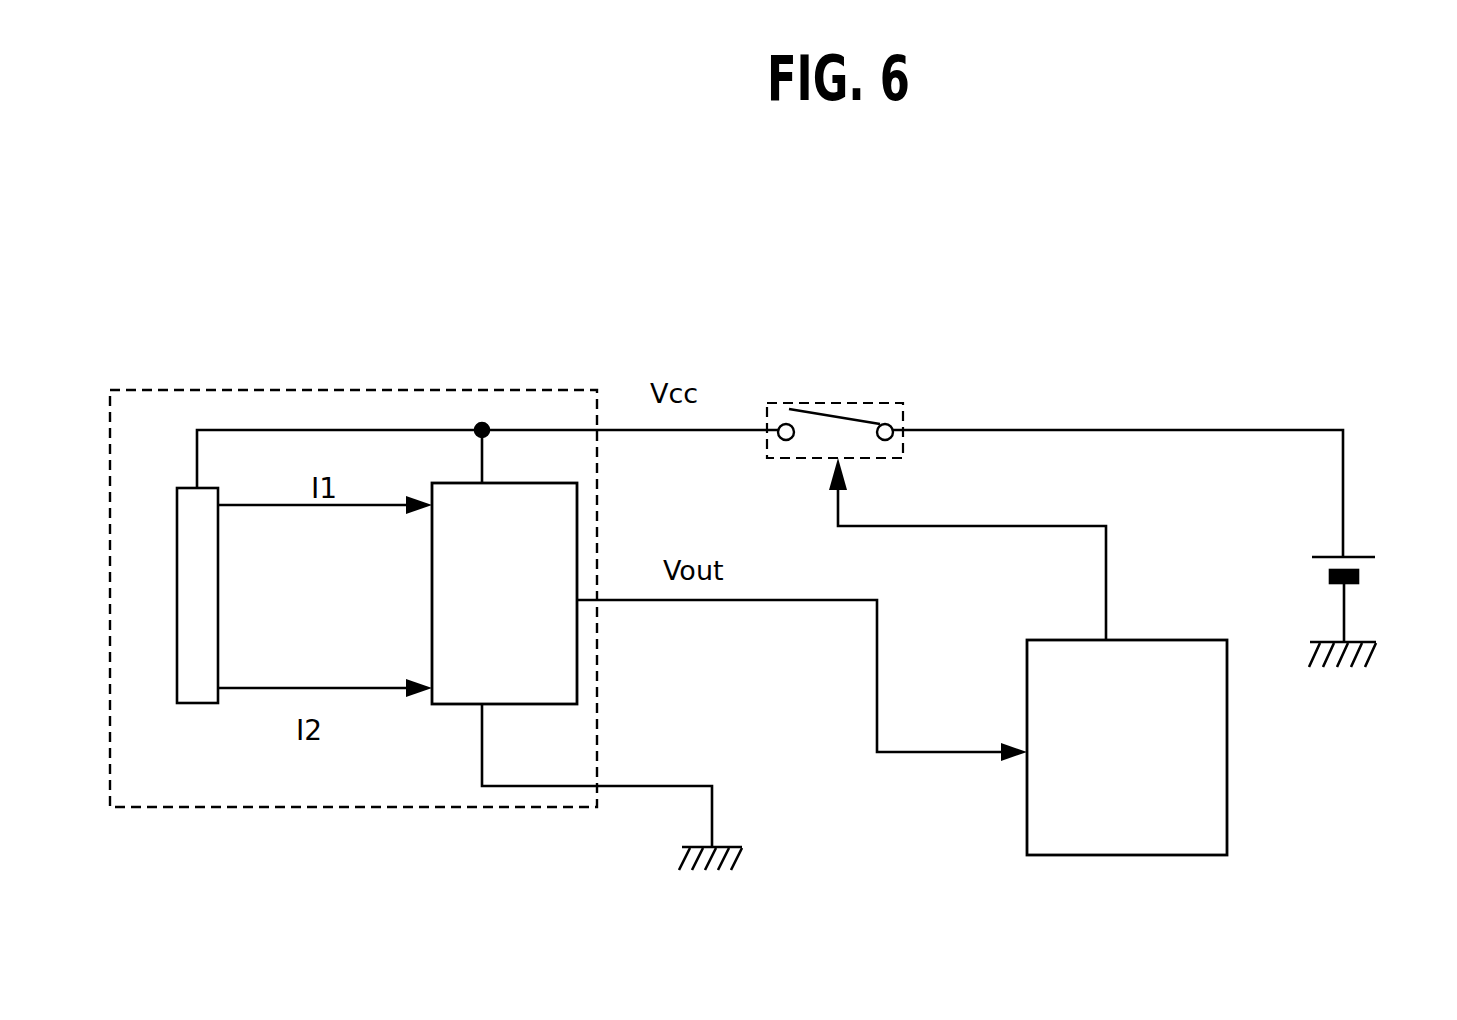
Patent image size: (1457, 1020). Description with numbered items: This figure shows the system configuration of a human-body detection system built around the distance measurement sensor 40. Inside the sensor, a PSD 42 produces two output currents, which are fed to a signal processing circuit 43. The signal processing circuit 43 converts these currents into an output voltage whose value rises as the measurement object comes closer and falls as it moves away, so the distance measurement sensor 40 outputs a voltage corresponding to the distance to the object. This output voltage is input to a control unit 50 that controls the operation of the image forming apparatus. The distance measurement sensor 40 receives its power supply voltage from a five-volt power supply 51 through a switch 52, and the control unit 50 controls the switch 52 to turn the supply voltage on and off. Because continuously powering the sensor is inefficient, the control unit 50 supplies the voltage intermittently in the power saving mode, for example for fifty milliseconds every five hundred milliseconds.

The distance measurement sensor 40 is at (345, 390).
The PSD 42 is at (187, 488).
The signal processing circuit 43 is at (527, 705).
The control unit 50 is at (1165, 640).
The 5 V power supply 51 is at (1357, 548).
The switch 52 is at (822, 403).